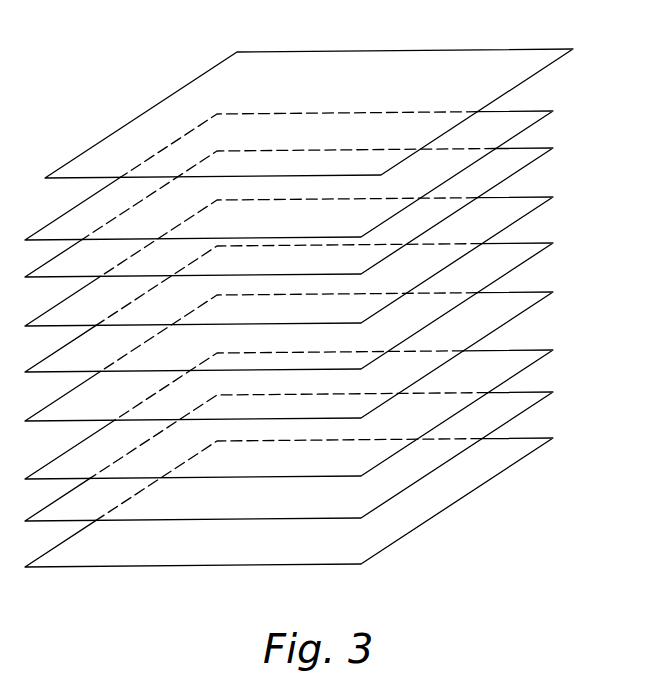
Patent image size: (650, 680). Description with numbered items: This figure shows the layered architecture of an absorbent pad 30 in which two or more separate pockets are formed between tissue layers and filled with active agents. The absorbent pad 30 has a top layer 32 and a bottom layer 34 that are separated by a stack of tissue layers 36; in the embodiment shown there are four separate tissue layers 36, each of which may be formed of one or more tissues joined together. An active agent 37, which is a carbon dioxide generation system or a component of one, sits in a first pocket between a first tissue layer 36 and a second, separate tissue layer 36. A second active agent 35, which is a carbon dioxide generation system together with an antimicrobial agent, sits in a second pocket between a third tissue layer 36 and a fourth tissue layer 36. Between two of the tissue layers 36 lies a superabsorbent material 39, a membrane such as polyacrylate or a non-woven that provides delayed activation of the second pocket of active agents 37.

The absorbent pad 30 is at (113, 73).
The top layer 32 is at (327, 60).
The bottom layer 34 is at (465, 497).
The active agent 35 is at (530, 366).
The tissue layer 36 is at (525, 109).
The active agent 37 is at (530, 164).
The superabsorbent material 39 is at (530, 259).